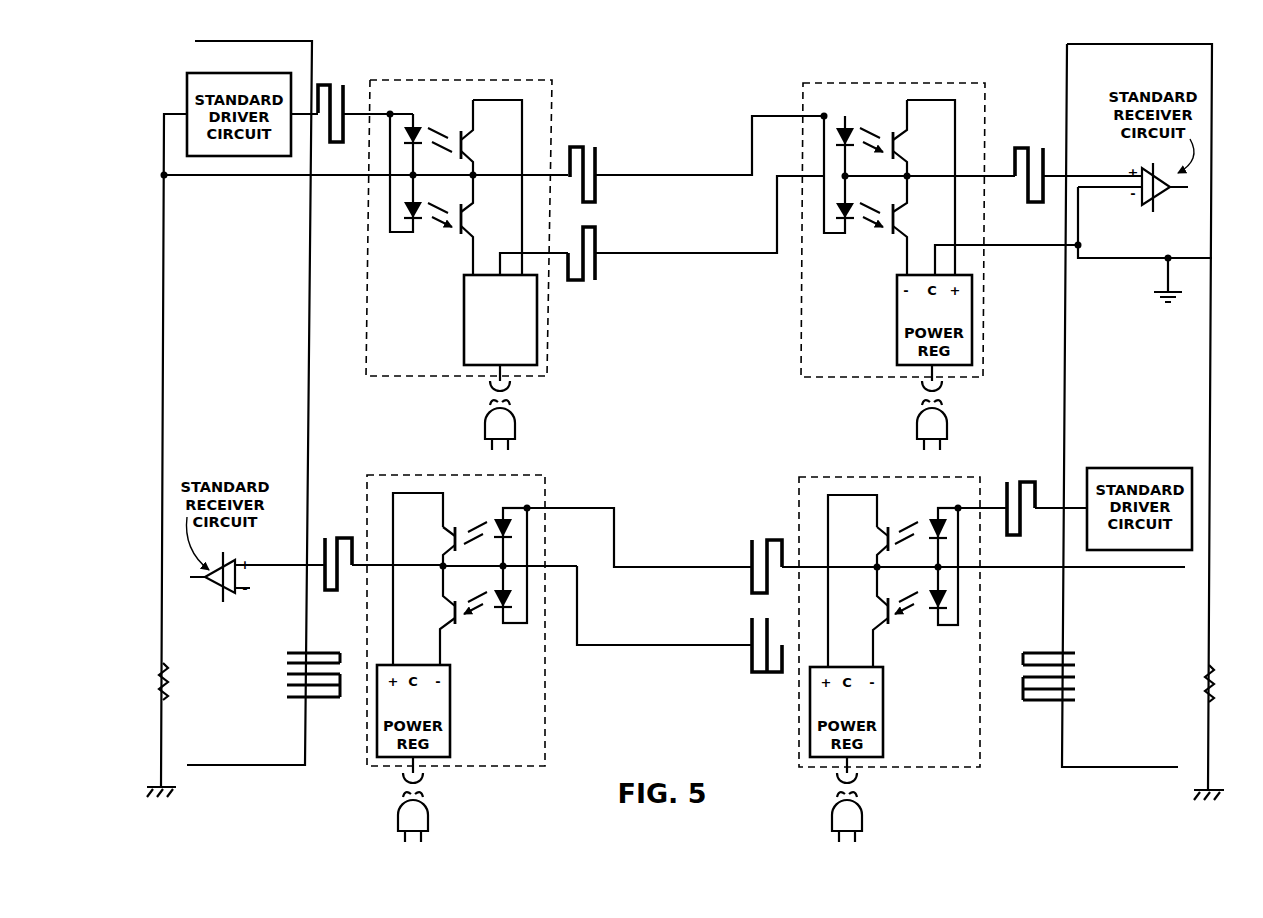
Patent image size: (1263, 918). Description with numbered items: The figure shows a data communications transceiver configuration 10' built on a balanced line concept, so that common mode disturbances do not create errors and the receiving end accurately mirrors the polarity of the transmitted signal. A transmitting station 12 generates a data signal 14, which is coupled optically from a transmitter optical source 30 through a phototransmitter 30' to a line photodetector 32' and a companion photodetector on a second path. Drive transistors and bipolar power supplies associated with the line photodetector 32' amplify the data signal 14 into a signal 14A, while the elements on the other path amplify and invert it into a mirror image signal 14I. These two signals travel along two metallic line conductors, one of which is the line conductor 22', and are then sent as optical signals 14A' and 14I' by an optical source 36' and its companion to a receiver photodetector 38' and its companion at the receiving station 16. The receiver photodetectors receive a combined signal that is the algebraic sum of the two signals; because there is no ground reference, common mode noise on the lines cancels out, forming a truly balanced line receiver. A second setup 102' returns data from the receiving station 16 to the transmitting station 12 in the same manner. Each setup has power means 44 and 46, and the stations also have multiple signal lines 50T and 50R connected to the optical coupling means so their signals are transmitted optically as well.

The configuration 10' is at (696, 182).
The second setup 102' is at (654, 629).
The transmitting station 12 is at (257, 745).
The data signal 14 is at (328, 86).
The amplified signal 14A is at (605, 155).
The mirror image signal 14I is at (617, 265).
The optical signal 14A' is at (900, 105).
The optical signal 14I' is at (855, 248).
The receiving station 16 is at (1098, 755).
The metallic line conductor 22' is at (709, 145).
The transmitter optical source 30 is at (447, 207).
The phototransmitter 30' is at (415, 95).
The line photodetector 32' is at (486, 137).
The optical source 36' is at (856, 94).
The receiver photodetector 38' is at (953, 111).
The power means 44 is at (470, 404).
The power means 46 is at (818, 789).
The signal lines 50R is at (322, 720).
The signal lines 50T is at (1038, 720).